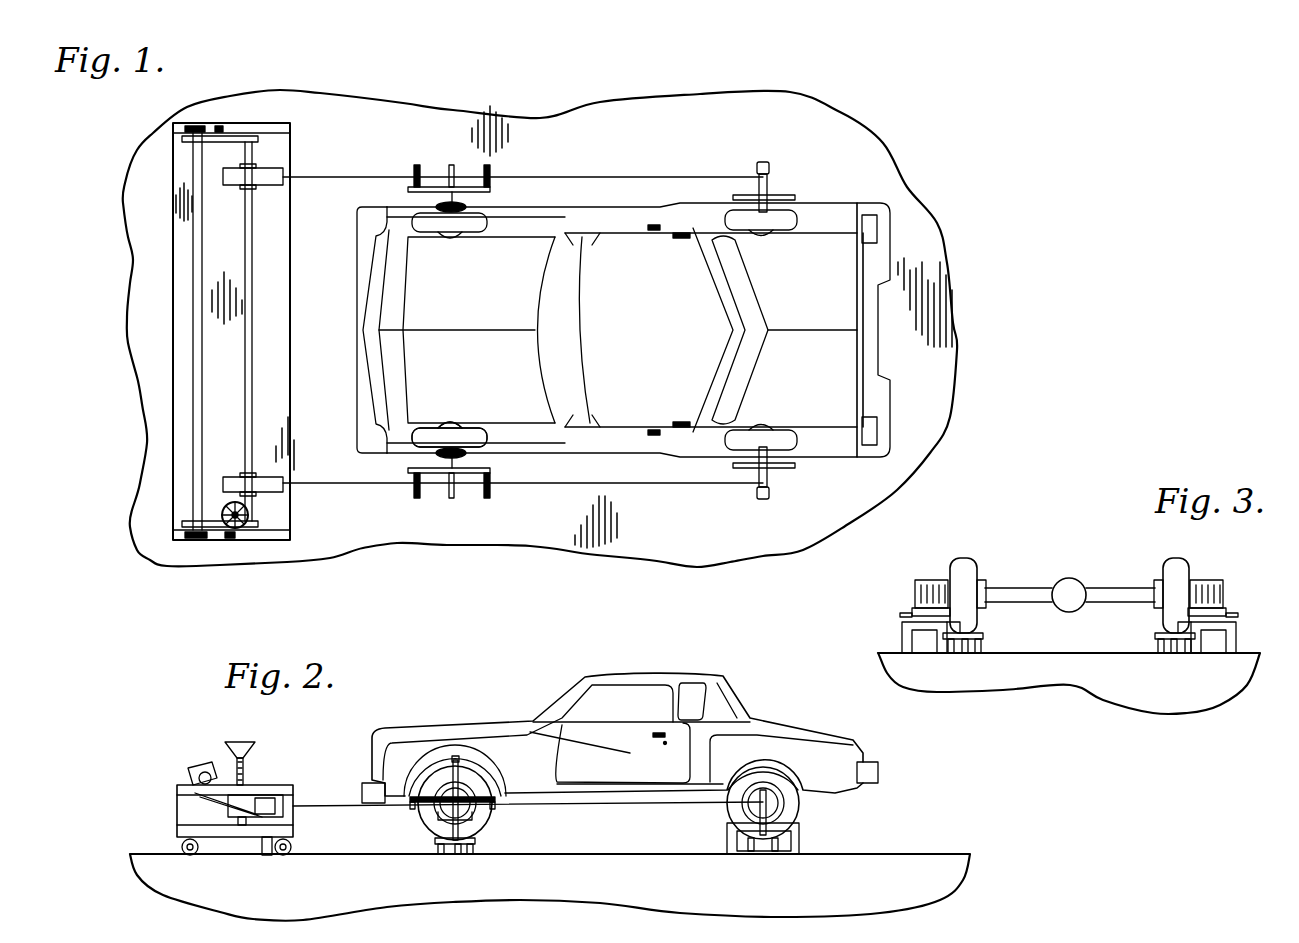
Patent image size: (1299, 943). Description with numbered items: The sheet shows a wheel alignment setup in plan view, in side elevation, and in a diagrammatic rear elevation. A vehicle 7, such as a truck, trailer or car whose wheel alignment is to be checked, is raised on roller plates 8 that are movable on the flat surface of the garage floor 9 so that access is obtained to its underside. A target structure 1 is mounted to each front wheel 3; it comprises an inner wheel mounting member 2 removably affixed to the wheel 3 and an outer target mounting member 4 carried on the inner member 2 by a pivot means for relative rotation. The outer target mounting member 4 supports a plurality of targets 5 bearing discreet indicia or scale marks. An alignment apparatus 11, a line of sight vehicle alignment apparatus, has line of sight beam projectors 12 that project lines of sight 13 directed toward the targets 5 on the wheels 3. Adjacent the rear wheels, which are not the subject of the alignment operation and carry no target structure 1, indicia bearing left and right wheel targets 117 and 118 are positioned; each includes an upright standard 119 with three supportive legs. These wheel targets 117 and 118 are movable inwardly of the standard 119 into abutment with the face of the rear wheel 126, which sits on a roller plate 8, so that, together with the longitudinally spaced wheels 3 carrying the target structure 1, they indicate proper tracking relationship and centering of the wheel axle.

In FIG. 1, the target structure 1 is at (444, 324).
In FIG. 2, the target structure 1 is at (490, 762).
In FIG. 1, the inner wheel mounting member 2 is at (455, 200).
In FIG. 1, the wheel 3 is at (470, 440).
In FIG. 2, the wheel 3 is at (473, 766).
In FIG. 1, the outer target mounting member 4 is at (465, 188).
In FIG. 2, the outer target mounting member 4 is at (455, 760).
In FIG. 1, the targets 5 is at (412, 170).
In FIG. 2, the targets 5 is at (496, 801).
In FIG. 1, the vehicle 7 is at (654, 338).
In FIG. 2, the vehicle 7 is at (666, 775).
In FIG. 1, the roller plates 8 is at (452, 425).
In FIG. 2, the roller plates 8 is at (432, 841).
In FIG. 3, the roller plates 8 is at (986, 638).
In FIG. 1, the garage floor 9 is at (790, 534).
In FIG. 2, the garage floor 9 is at (900, 854).
In FIG. 3, the garage floor 9 is at (1200, 678).
In FIG. 1, the alignment apparatus 11 is at (292, 308).
In FIG. 2, the alignment apparatus 11 is at (262, 788).
In FIG. 1, the line of sight beam projectors 12 is at (283, 490).
In FIG. 2, the line of sight beam projectors 12 is at (283, 798).
In FIG. 1, the lines of sight 13 is at (360, 180).
In FIG. 2, the lines of sight 13 is at (330, 808).
In FIG. 1, the left wheel target 117 is at (770, 167).
In FIG. 3, the left wheel target 117 is at (914, 594).
In FIG. 3, the right wheel target 118 is at (1226, 594).
In FIG. 1, the upright standard 119 is at (797, 196).
In FIG. 3, the upright standard 119 is at (902, 633).
In FIG. 3, the wheel 126 is at (1180, 560).